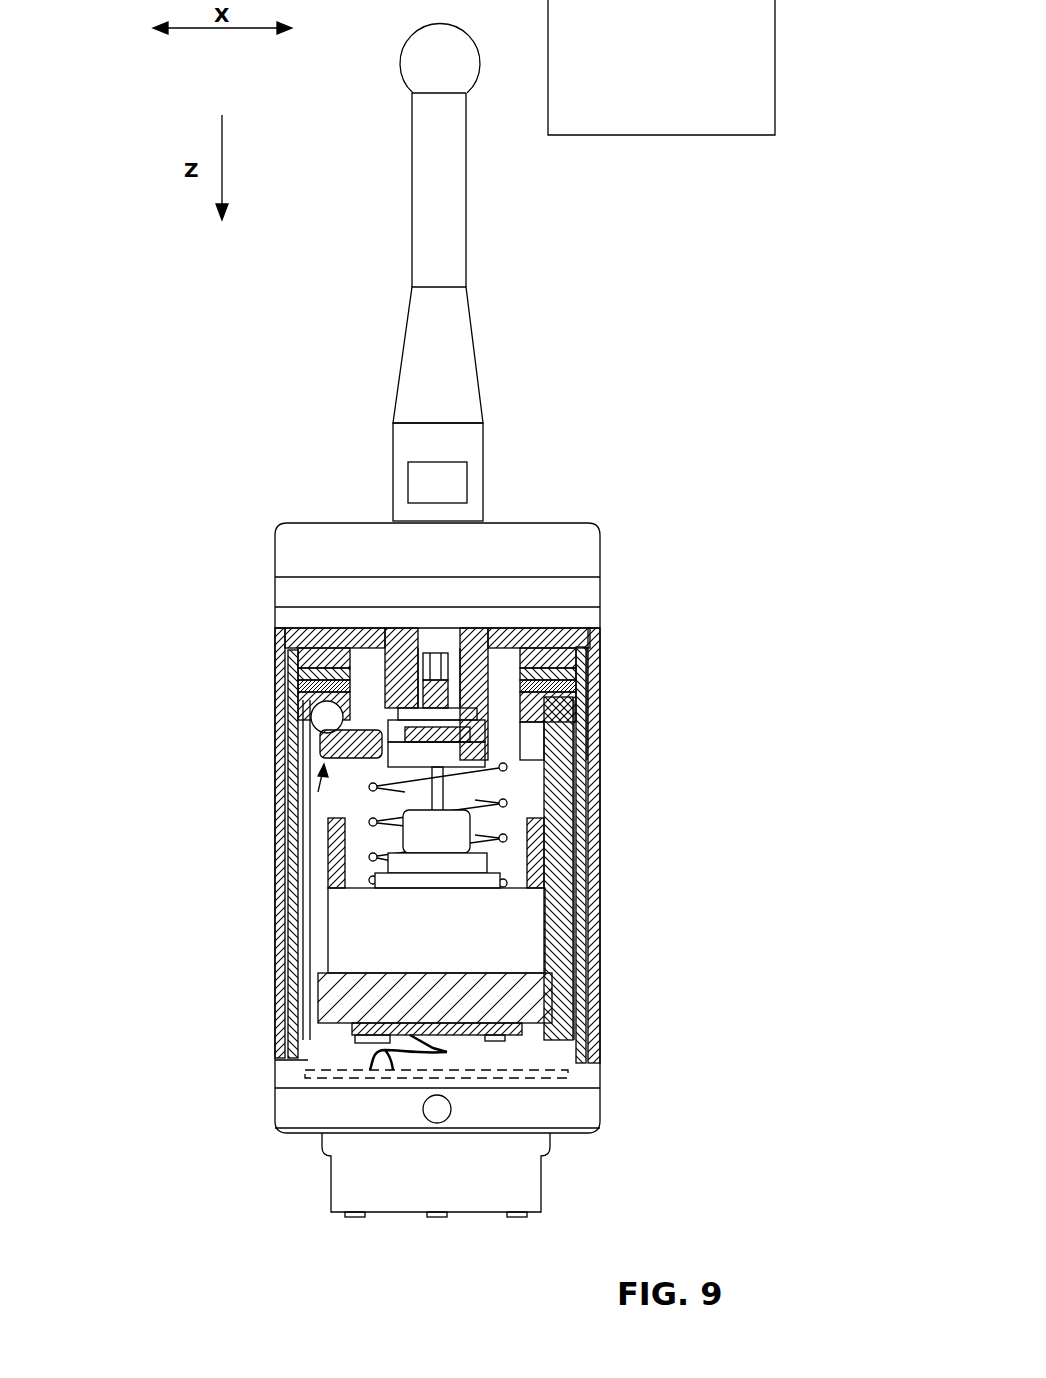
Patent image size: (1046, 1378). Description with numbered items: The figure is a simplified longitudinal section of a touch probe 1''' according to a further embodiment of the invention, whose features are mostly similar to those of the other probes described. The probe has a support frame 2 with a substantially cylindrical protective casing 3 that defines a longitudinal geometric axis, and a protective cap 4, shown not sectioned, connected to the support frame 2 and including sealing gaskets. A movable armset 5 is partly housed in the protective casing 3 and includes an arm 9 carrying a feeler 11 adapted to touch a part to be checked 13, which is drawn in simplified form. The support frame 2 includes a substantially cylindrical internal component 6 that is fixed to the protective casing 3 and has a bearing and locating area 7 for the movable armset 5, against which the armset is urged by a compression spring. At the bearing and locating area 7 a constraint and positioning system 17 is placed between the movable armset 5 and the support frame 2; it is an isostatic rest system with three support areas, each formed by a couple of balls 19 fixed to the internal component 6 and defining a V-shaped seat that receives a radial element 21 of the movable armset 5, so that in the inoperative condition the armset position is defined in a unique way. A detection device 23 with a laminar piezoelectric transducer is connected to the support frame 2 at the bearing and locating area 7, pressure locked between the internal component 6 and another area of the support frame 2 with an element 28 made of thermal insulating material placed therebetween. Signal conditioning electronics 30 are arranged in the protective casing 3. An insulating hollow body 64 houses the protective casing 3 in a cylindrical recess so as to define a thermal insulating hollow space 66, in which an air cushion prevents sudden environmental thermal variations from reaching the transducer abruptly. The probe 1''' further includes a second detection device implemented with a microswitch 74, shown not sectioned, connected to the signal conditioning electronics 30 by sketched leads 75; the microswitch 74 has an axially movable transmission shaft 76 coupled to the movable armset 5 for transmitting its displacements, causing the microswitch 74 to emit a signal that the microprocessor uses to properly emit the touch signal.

The touch probe 1''' is at (620, 307).
The support frame 2 is at (622, 685).
The protective casing 3 is at (297, 833).
The protective cap 4 is at (307, 552).
The movable armset 5 is at (458, 720).
The internal component 6 is at (303, 867).
The bearing and locating area 7 is at (317, 703).
The arm 9 is at (428, 340).
The feeler 11 is at (418, 58).
The part to be checked 13 is at (653, 98).
The constraint and positioning system 17 is at (368, 770).
The ball 19 is at (323, 715).
The radial element 21 is at (345, 797).
The detection device 23 is at (313, 690).
The element made of thermal insulating material 28 is at (315, 673).
The signal conditioning electronics 30 is at (485, 1050).
The insulating hollow body 64 is at (280, 900).
The thermal insulating hollow space 66 is at (340, 647).
The microswitch 74 is at (443, 880).
The leads 75 is at (443, 1052).
The transmission shaft 76 is at (447, 777).